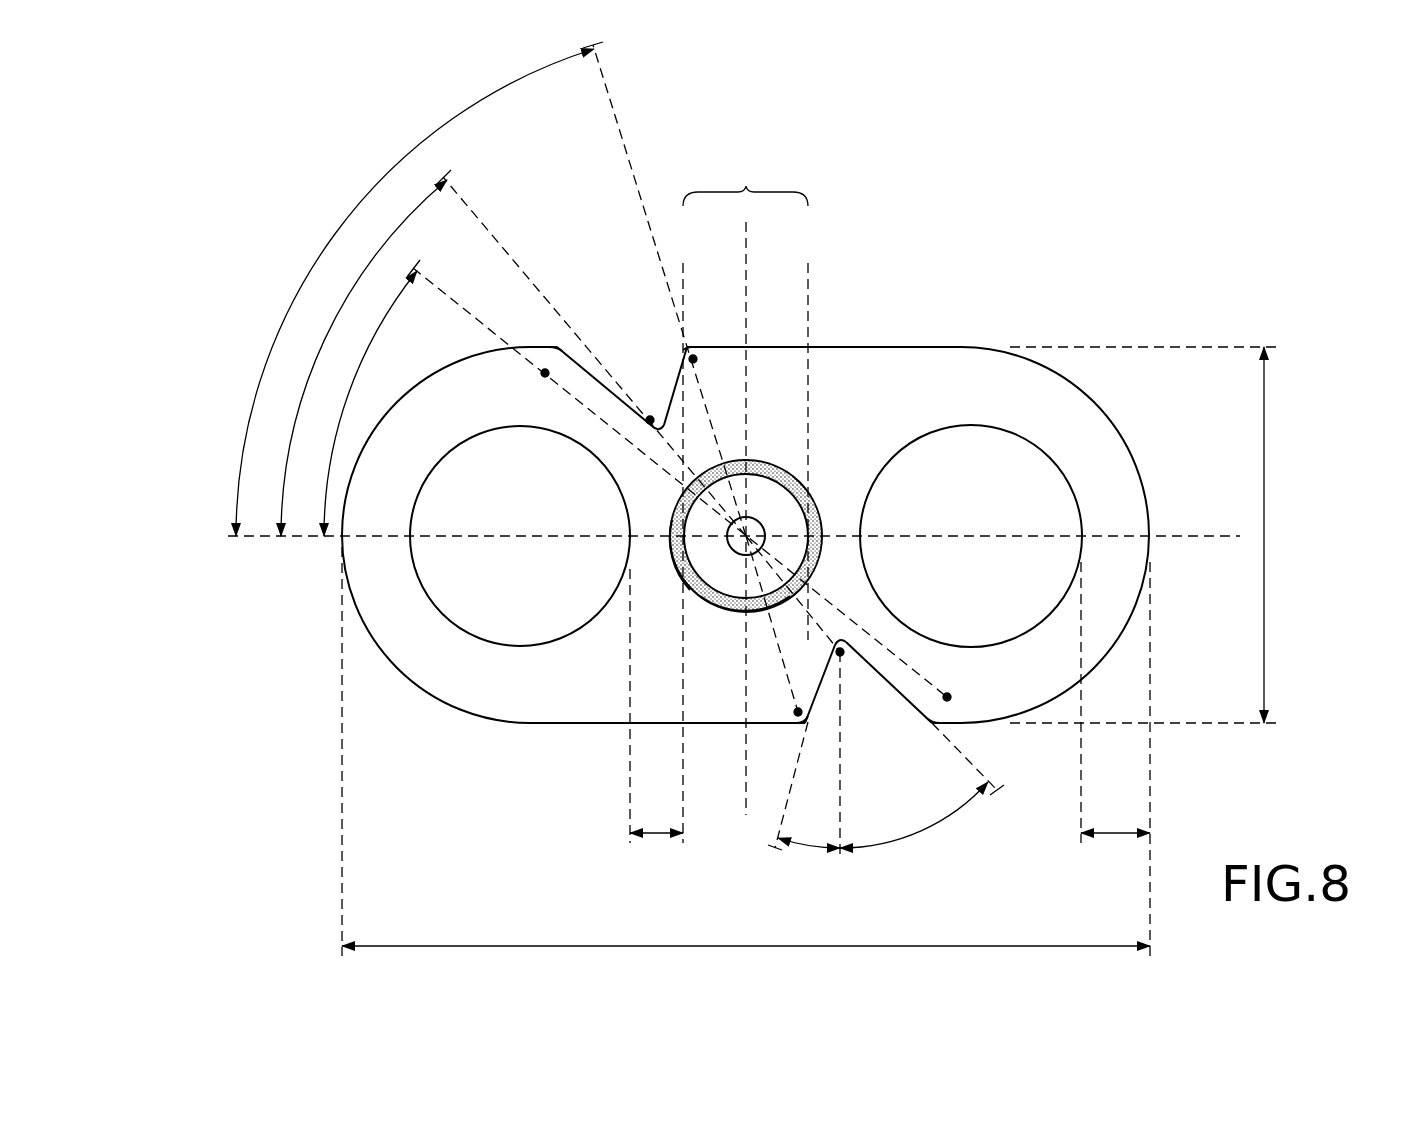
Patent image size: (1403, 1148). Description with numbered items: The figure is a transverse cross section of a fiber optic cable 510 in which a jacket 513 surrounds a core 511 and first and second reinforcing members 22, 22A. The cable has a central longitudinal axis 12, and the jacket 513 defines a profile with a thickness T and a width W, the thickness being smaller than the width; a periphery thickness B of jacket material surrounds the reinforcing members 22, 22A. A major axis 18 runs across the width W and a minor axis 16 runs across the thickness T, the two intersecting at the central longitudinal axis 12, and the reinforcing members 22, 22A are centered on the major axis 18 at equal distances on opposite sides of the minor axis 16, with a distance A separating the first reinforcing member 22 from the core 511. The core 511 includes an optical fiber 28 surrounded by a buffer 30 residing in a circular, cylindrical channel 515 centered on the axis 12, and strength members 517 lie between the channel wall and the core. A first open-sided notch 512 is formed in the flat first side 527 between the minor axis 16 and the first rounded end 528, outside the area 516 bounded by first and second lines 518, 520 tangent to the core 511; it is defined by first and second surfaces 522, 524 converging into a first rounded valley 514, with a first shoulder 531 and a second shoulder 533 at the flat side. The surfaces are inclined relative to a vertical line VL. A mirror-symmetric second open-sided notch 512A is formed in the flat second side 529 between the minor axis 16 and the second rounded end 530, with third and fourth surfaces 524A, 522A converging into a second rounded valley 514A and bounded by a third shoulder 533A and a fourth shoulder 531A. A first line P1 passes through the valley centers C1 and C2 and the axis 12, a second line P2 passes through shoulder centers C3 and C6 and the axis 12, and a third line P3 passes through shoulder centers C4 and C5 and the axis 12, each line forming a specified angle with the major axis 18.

The central longitudinal axis 12 is at (752, 526).
The minor axis 16 is at (748, 246).
The major axis 18 is at (1212, 536).
The first reinforcing member 22 is at (520, 536).
The second reinforcing member 22A is at (971, 536).
The optical fiber 28 is at (740, 545).
The buffer 30 is at (741, 598).
The fiber optic cable 510 is at (728, 551).
The core 511 is at (778, 462).
The first open-sided notch 512 is at (643, 348).
The second open-sided notch 512A is at (864, 741).
The jacket 513 is at (953, 385).
The first rounded valley 514 is at (660, 436).
The second rounded valley 514A is at (838, 640).
The circular, cylindrical channel 515 is at (677, 548).
The area 516 is at (745, 182).
The strength members 517 is at (813, 510).
The first line 518 is at (683, 280).
The second line 520 is at (809, 284).
The first surface 522 is at (592, 362).
The fourth surface 522A is at (897, 692).
The second surface 524 is at (661, 372).
The third surface 524A is at (823, 690).
The first side 527 is at (906, 347).
The first rounded end 528 is at (340, 553).
The second side 529 is at (575, 727).
The second rounded end 530 is at (1133, 453).
The first shoulder 531 is at (556, 347).
The fourth shoulder 531A is at (935, 725).
The second shoulder 533 is at (679, 342).
The third shoulder 533A is at (807, 728).
The center of the first radius of curvature C1 is at (648, 410).
The center of the second radius of curvature C2 is at (848, 660).
The center of the third radius of curvature C3 is at (540, 376).
The center of the fourth radius of curvature C4 is at (703, 362).
The center of the fifth radius of curvature C5 is at (790, 712).
The center of the sixth radius of curvature C6 is at (960, 695).
The first line P1 is at (465, 205).
The second line P2 is at (437, 290).
The third line P3 is at (603, 80).
The distance A is at (656, 815).
The periphery thickness B is at (1115, 815).
The width W is at (746, 931).
The thickness T is at (1277, 535).
The vertical line VL is at (850, 848).